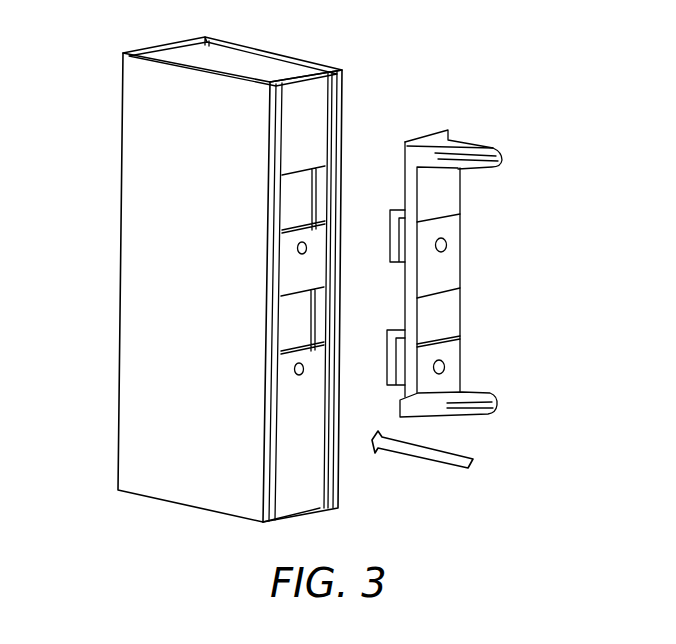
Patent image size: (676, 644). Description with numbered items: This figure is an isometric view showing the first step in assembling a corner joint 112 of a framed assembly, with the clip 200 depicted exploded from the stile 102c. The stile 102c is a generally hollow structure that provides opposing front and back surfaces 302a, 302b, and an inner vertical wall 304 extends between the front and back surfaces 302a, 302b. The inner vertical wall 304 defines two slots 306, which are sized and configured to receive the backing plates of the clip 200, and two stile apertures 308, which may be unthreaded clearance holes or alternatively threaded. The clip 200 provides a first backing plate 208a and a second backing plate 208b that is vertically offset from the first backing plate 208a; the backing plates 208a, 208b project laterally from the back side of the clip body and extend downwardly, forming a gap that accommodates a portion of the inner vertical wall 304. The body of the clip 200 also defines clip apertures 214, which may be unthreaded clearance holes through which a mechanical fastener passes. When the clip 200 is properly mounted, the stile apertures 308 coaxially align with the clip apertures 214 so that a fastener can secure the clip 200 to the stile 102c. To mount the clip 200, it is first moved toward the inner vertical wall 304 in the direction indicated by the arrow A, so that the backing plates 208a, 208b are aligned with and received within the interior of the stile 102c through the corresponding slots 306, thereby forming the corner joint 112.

The stile 102c is at (244, 272).
The front surface 302a is at (140, 165).
The back surface 302b is at (351, 292).
The inner vertical wall 304 is at (306, 88).
The slot 306 is at (306, 186).
The stile aperture 308 is at (308, 250).
The clip 200 is at (469, 260).
The first backing plate 208a is at (393, 228).
The second backing plate 208b is at (392, 362).
The clip aperture 214 is at (447, 245).
The corner joint 112 is at (458, 58).
The arrow A is at (417, 458).